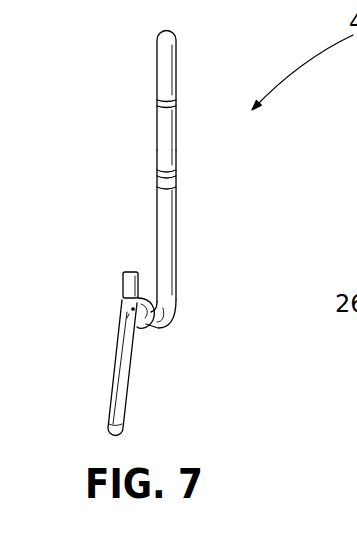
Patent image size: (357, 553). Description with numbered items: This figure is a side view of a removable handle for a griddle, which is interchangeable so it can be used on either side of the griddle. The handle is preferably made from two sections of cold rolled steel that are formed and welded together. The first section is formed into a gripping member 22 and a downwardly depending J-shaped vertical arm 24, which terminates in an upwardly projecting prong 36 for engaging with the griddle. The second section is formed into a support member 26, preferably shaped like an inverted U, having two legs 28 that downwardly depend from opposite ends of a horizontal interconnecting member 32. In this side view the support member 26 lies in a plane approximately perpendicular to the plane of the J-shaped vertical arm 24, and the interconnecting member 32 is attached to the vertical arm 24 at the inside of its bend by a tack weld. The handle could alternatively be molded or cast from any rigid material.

The gripping member 22 is at (177, 85).
The J-shaped vertical arm 24 is at (177, 227).
The support member 26 is at (142, 409).
The legs 28 is at (112, 373).
The interconnecting member 32 is at (148, 278).
The upwardly projecting prong 36 is at (123, 272).